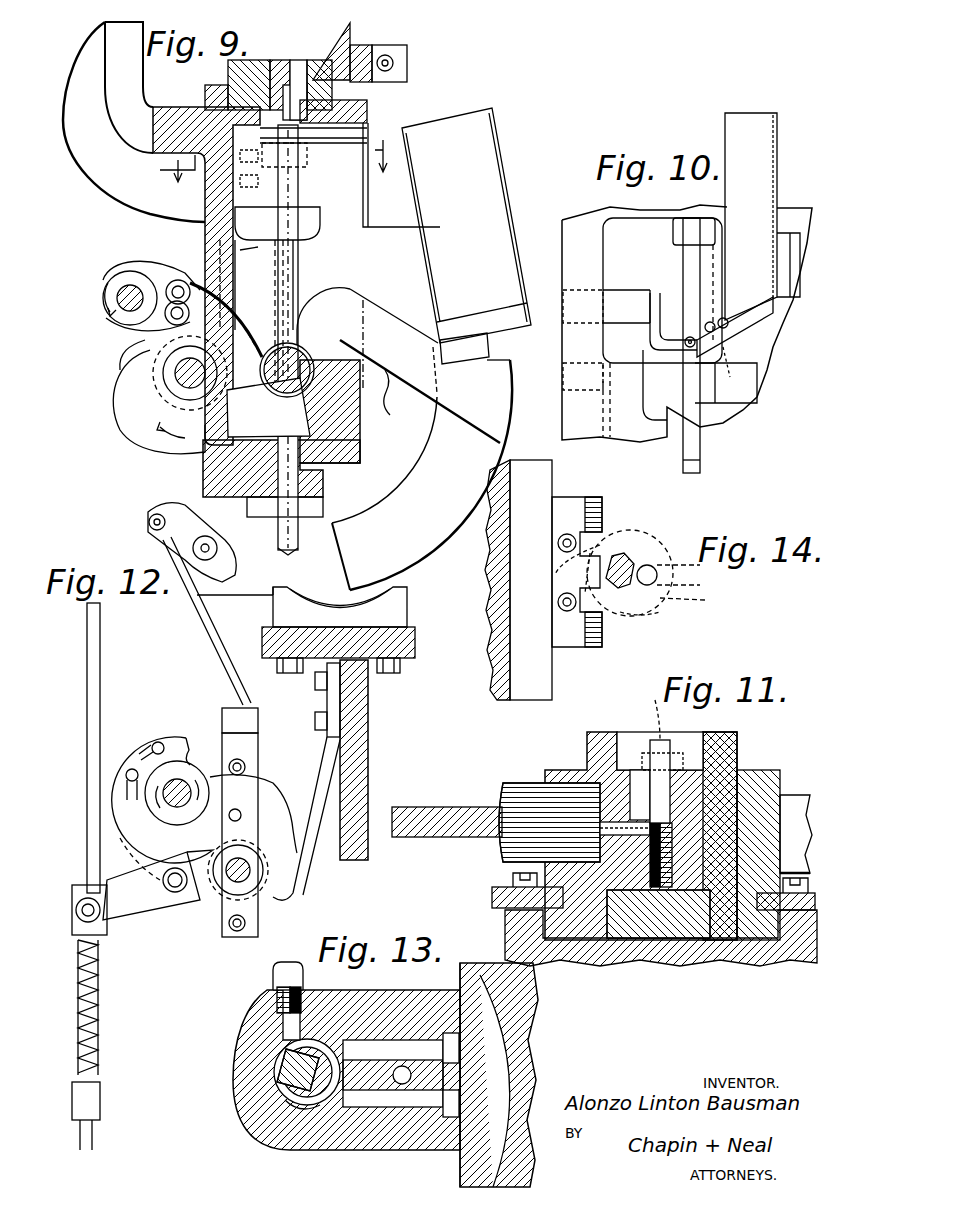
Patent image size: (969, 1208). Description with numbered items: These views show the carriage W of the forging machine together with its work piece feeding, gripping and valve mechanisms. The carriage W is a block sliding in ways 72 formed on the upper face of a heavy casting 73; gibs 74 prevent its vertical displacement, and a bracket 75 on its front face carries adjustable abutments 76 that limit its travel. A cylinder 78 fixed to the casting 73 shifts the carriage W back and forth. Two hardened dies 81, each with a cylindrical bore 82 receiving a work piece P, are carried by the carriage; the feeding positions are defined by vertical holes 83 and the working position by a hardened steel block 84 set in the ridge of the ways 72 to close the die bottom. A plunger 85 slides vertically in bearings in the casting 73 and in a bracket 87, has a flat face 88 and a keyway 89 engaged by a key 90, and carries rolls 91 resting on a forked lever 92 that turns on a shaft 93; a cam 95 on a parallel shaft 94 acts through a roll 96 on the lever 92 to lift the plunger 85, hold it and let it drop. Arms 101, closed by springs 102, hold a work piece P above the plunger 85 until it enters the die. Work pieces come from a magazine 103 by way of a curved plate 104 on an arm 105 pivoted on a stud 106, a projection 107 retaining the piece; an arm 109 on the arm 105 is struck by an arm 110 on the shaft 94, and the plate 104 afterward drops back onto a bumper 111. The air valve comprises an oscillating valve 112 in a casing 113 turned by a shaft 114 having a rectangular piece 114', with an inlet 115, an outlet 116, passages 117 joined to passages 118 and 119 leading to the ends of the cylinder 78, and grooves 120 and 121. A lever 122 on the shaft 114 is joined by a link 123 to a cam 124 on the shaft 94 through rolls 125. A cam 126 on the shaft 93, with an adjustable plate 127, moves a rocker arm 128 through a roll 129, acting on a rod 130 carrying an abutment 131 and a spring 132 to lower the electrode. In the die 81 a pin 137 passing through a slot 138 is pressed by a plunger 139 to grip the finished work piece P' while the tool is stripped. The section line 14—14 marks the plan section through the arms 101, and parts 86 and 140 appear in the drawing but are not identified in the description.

In FIG. 9, the section line 14— 14 is at (270, 163).
In FIG. 9, the ways 72 is at (367, 122).
In FIG. 11, the ways 72 is at (570, 966).
In FIG. 9, the heavy casting 73 is at (212, 232).
In FIG. 10, the heavy casting 73 is at (590, 227).
In FIG. 14, the heavy casting 73 is at (518, 580).
In FIG. 11, the heavy casting 73 is at (745, 960).
In FIG. 9, the gibs 74 is at (207, 90).
In FIG. 11, the gibs 74 is at (492, 892).
In FIG. 9, the bracket 75 is at (365, 48).
In FIG. 11, the bracket 75 is at (795, 800).
In FIG. 9, the adjustable abutments 76 is at (407, 63).
In FIG. 9, the cylinder 78 is at (395, 608).
In FIG. 13, the cylinder 78 is at (510, 1025).
In FIG. 9, the hardened die 81 is at (282, 79).
In FIG. 11, the hardened die 81 is at (650, 823).
In FIG. 9, the cylindrical bore 82 is at (308, 71).
In FIG. 9, the vertical holes 83 is at (259, 74).
In FIG. 11, the hardened steel block 84 is at (668, 922).
In FIG. 9, the plunger 85 is at (290, 272).
In FIG. 10, the plunger 85 is at (686, 263).
In FIG. 14, the plunger 85 is at (668, 612).
In FIG. 9, the wedge 86 is at (331, 51).
In FIG. 9, the bracket 87 is at (253, 258).
In FIG. 14, the bracket 87 is at (542, 480).
In FIG. 9, the flat face 88 is at (302, 276).
In FIG. 14, the flat face 88 is at (622, 570).
In FIG. 9, the keyway 89 is at (282, 292).
In FIG. 9, the key 90 is at (223, 285).
In FIG. 14, the key 90 is at (618, 556).
In FIG. 9, the rolls 91 is at (298, 352).
In FIG. 9, the lever 92 is at (192, 280).
In FIG. 10, the lever 92 is at (703, 303).
In FIG. 9, the shaft 93 is at (125, 325).
In FIG. 12, the shaft 93 is at (180, 785).
In FIG. 10, the shaft 93 is at (612, 257).
In FIG. 9, the shaft 94 is at (190, 373).
In FIG. 12, the shaft 94 is at (245, 882).
In FIG. 9, the cams 95 is at (135, 340).
In FIG. 9, the roll 96 is at (172, 282).
In FIG. 9, the arms 101 is at (307, 158).
In FIG. 14, the arms 101 is at (640, 569).
In FIG. 14, the springs 102 is at (640, 650).
In FIG. 9, the magazine 103 is at (466, 225).
In FIG. 10, the magazine 103 is at (751, 216).
In FIG. 9, the curved plate 104 is at (422, 475).
In FIG. 10, the curved plate 104 is at (686, 458).
In FIG. 14, the curved plate 104 is at (705, 573).
In FIG. 9, the arm 105 is at (420, 366).
In FIG. 10, the arm 105 is at (626, 306).
In FIG. 9, the stud 106 is at (300, 345).
In FIG. 10, the stud 106 is at (603, 390).
In FIG. 9, the projection 107 is at (465, 335).
In FIG. 10, the projection 107 is at (700, 335).
In FIG. 9, the arm 109 is at (262, 331).
In FIG. 9, the arm 110 is at (190, 292).
In FIG. 9, the bumper 111 is at (403, 397).
In FIG. 13, the oscillating valve 112 is at (330, 1040).
In FIG. 9, the casing 113 is at (248, 596).
In FIG. 13, the casing 113 is at (258, 1120).
In FIG. 9, the shaft 114 is at (228, 564).
In FIG. 13, the shaft 114 is at (261, 1156).
In FIG. 13, the rectangular piece 114' is at (252, 1070).
In FIG. 13, the inlet 115 is at (286, 1020).
In FIG. 13, the outlet 116 is at (403, 1066).
In FIG. 13, the passages 117 is at (370, 1045).
In FIG. 13, the passage 118 is at (450, 1032).
In FIG. 13, the passage 119 is at (450, 1117).
In FIG. 13, the peripheral groove 120 is at (282, 1058).
In FIG. 13, the peripheral groove 121 is at (310, 1130).
In FIG. 9, the lever 122 is at (175, 505).
In FIG. 9, the link 123 is at (225, 670).
In FIG. 9, the cam 124 is at (272, 790).
In FIG. 12, the cam 124 is at (310, 772).
In FIG. 9, the rolls 125 is at (322, 683).
In FIG. 12, the rolls 125 is at (222, 930).
In FIG. 12, the cam 126 is at (125, 810).
In FIG. 12, the plate 127 is at (188, 730).
In FIG. 12, the rocker arm 128 is at (150, 865).
In FIG. 12, the roll 129 is at (80, 885).
In FIG. 12, the rod 130 is at (87, 760).
In FIG. 12, the adjustable abutment 131 is at (100, 1100).
In FIG. 12, the spring 132 is at (98, 993).
In FIG. 11, the pin 137 is at (628, 825).
In FIG. 11, the slot 138 is at (612, 790).
In FIG. 11, the plunger 139 is at (520, 790).
In FIG. 11, the shaft 140 is at (470, 812).
In FIG. 9, the work piece P is at (391, 340).
In FIG. 10, the work piece P is at (733, 371).
In FIG. 14, the work piece P is at (696, 596).
In FIG. 11, the work piece P is at (647, 707).
In FIG. 11, the finished work piece P' is at (673, 750).
In FIG. 9, the carriage W is at (228, 72).
In FIG. 11, the carriage W is at (755, 760).